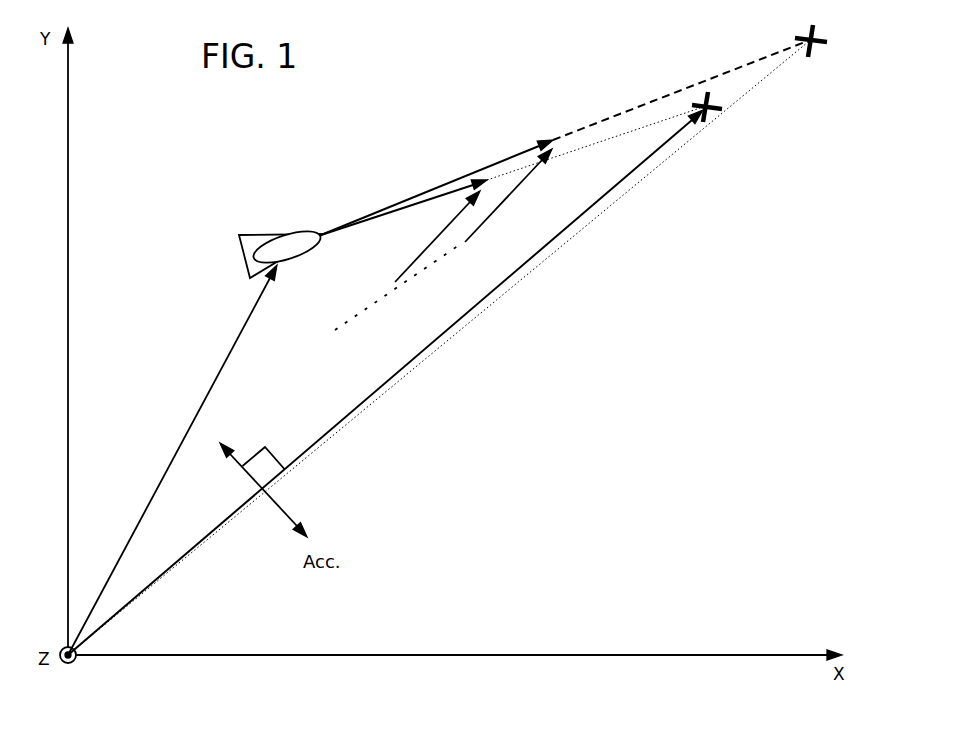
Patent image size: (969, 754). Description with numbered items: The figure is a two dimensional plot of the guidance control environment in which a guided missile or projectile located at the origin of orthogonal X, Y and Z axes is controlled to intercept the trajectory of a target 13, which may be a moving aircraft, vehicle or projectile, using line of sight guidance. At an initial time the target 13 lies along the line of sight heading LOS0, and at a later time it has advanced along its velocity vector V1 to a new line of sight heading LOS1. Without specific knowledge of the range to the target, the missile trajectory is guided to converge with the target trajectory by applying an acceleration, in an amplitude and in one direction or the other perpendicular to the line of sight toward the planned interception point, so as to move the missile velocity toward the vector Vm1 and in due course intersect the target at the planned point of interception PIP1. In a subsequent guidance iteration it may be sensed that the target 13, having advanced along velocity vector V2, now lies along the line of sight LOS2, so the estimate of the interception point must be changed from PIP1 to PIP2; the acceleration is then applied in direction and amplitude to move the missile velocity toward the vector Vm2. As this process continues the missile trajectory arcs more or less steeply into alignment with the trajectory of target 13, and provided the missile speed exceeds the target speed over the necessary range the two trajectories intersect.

The target 13 is at (283, 240).
The line of sight heading LOS0 is at (202, 404).
The line of sight heading LOS1 is at (428, 256).
The line of sight LOS2 is at (437, 256).
The velocity vector V1 is at (425, 198).
The velocity vector V2 is at (523, 150).
The missile velocity vector Vm1 is at (424, 350).
The missile velocity vector Vm2 is at (535, 268).
The planned point of interception PIP1 is at (710, 113).
The planned point of interception PIP2 is at (822, 49).